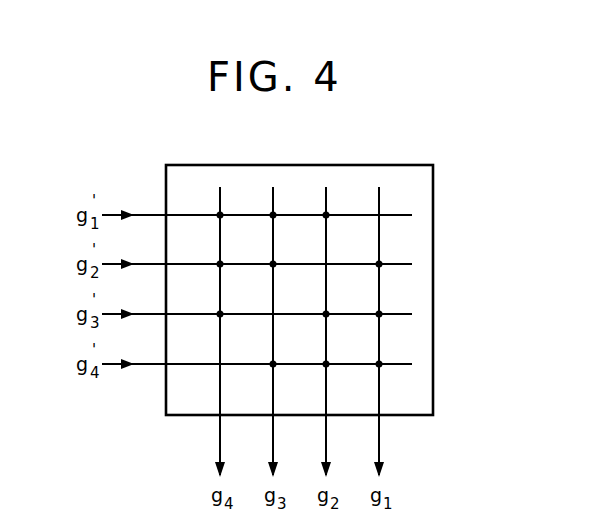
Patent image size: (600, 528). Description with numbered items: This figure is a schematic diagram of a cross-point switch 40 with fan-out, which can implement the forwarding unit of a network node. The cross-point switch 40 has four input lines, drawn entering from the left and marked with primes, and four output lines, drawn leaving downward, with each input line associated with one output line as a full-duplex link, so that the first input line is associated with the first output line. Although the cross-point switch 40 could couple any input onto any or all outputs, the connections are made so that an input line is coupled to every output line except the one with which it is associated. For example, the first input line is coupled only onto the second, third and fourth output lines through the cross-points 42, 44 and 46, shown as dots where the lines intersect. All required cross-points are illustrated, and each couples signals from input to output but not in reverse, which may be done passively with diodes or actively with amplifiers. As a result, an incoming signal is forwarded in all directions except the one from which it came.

The cross-point switch 40 is at (434, 208).
The cross-point 42 is at (328, 213).
The cross-point 44 is at (275, 213).
The cross-point 46 is at (222, 213).